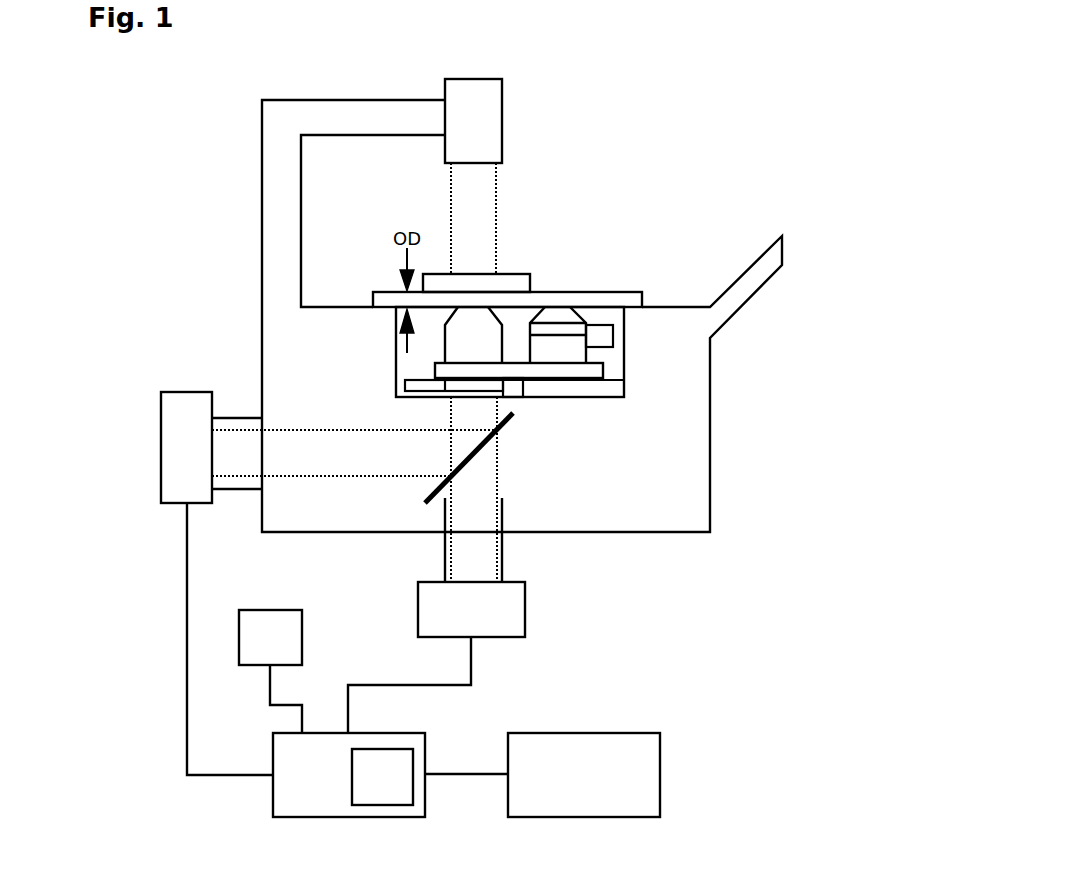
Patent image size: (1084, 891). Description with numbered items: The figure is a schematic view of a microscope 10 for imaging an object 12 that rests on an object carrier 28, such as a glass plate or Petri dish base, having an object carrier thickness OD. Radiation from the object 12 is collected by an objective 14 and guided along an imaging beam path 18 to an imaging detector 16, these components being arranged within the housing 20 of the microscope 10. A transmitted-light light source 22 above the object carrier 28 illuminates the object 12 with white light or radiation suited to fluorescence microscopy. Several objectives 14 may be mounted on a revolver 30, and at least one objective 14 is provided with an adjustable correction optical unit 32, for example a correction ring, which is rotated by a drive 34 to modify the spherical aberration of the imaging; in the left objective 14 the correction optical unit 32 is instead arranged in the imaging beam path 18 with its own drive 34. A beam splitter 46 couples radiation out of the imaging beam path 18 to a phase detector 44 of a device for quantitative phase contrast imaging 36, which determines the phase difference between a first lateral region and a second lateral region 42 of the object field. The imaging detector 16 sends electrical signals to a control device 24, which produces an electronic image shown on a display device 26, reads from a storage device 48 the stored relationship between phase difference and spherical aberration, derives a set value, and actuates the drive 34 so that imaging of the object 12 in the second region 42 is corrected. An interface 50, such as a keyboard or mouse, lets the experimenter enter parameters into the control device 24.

The microscope 10 is at (236, 167).
The object 12 is at (497, 330).
The objective 14 is at (563, 302).
The imaging detector 16 is at (200, 396).
The imaging beam path 18 is at (300, 428).
The housing 20 is at (675, 497).
The transmitted-light light source 22 is at (462, 95).
The control device 24 is at (307, 807).
The display device 26 is at (637, 765).
The object carrier 28 is at (579, 328).
The revolver 30 is at (592, 370).
The correction optical unit 32 is at (587, 307).
The drive 34 is at (411, 387).
The device for quantitative phase contrast imaging 36 is at (540, 614).
The second lateral region 42 is at (500, 888).
The phase detector 44 is at (508, 626).
The beam splitter 46 is at (487, 445).
The storage device 48 is at (390, 787).
The interface 50 is at (268, 625).